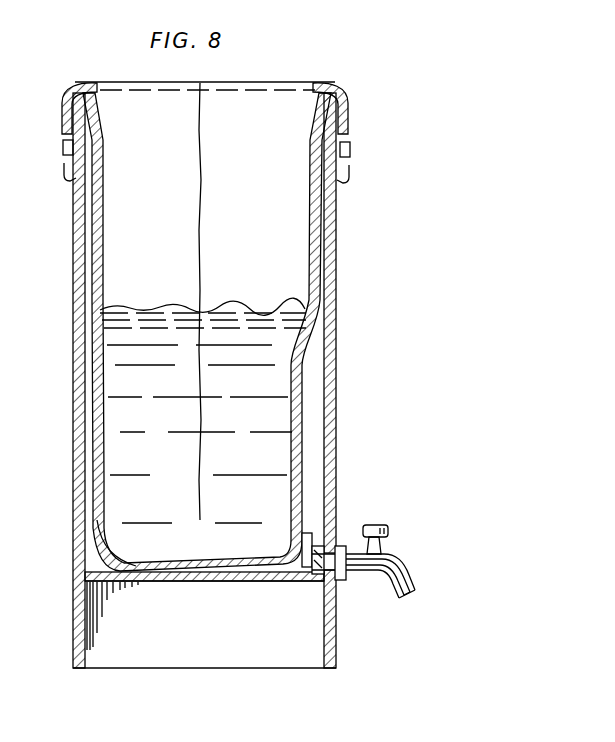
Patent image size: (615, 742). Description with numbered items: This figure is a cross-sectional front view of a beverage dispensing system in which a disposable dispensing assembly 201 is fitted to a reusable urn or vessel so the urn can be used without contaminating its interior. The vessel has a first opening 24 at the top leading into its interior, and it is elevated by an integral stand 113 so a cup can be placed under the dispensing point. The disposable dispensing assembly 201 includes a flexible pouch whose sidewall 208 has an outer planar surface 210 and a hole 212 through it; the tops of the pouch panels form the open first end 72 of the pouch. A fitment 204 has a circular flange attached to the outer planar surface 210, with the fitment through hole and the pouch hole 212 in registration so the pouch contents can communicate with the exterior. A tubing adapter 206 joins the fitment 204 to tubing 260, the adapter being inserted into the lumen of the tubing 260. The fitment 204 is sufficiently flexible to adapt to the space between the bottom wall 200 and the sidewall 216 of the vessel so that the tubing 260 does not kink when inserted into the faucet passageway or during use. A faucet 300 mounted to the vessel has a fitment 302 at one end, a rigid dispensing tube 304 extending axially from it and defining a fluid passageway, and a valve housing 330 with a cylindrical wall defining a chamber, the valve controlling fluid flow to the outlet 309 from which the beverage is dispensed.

The first opening 24 is at (291, 69).
The first end of the pouch 72 is at (352, 172).
The integral stand 113 is at (72, 606).
The bottom wall 200 is at (219, 584).
The disposable dispensing assembly 201 is at (72, 366).
The fitment 204 is at (282, 583).
The tubing adapter 206 is at (312, 557).
The sidewall 208 is at (135, 110).
The outer planar surface 210 is at (148, 213).
The hole 212 is at (291, 560).
The sidewall of the vessel 216 is at (74, 554).
The tubing 260 is at (413, 599).
The faucet 300 is at (393, 512).
The fitment 302 is at (344, 580).
The rigid dispensing tube 304 is at (398, 566).
The outlet 309 is at (412, 578).
The valve housing 330 is at (382, 545).